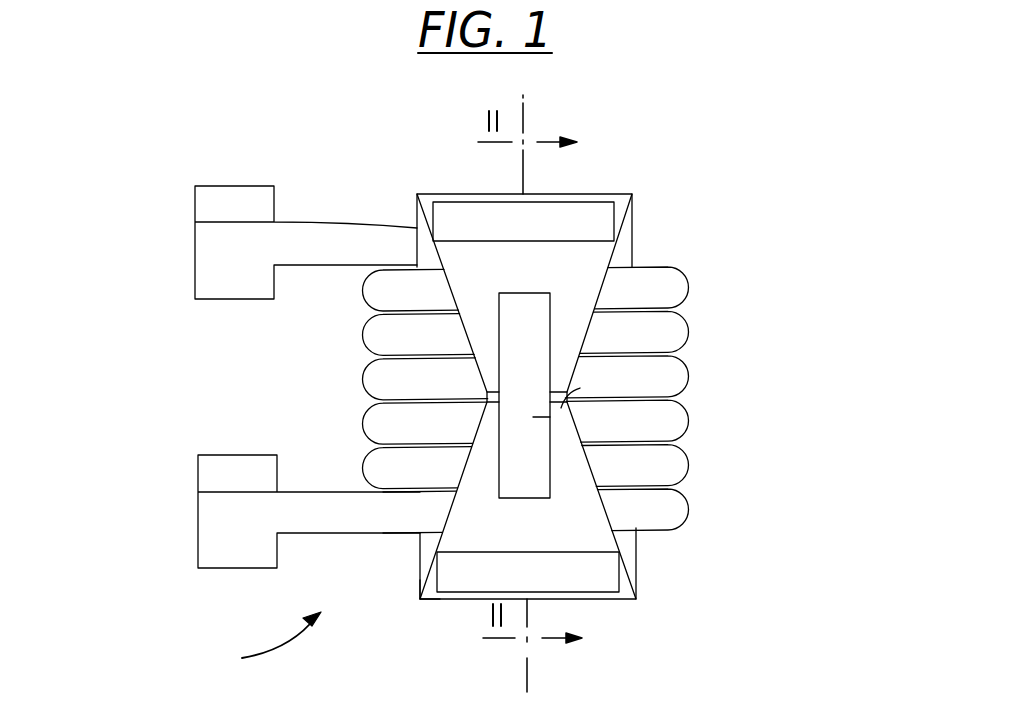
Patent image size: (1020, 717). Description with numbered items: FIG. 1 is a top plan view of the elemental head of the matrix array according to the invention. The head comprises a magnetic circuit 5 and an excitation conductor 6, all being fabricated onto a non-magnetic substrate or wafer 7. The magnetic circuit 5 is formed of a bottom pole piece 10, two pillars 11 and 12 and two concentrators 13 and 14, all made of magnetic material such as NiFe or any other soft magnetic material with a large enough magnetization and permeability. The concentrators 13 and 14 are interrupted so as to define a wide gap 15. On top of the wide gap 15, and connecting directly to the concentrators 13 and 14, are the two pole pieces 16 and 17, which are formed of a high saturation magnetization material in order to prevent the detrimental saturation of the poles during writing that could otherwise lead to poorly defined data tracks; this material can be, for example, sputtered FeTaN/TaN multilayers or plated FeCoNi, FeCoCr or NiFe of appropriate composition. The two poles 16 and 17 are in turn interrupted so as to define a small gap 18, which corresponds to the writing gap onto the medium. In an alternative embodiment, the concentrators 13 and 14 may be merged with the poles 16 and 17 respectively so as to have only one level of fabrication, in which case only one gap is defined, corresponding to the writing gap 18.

The magnetic circuit 5 is at (420, 600).
The excitation conductor 6 is at (223, 505).
The non-magnetic substrate 7 is at (269, 643).
The bottom pole piece 10 is at (625, 540).
The pillar 11 is at (558, 570).
The pillar 12 is at (542, 220).
The concentrator 13 is at (563, 457).
The concentrator 14 is at (560, 305).
The wide gap 15 is at (487, 393).
The pole piece 16 is at (533, 418).
The pole piece 17 is at (528, 377).
The small gap 18 is at (562, 397).